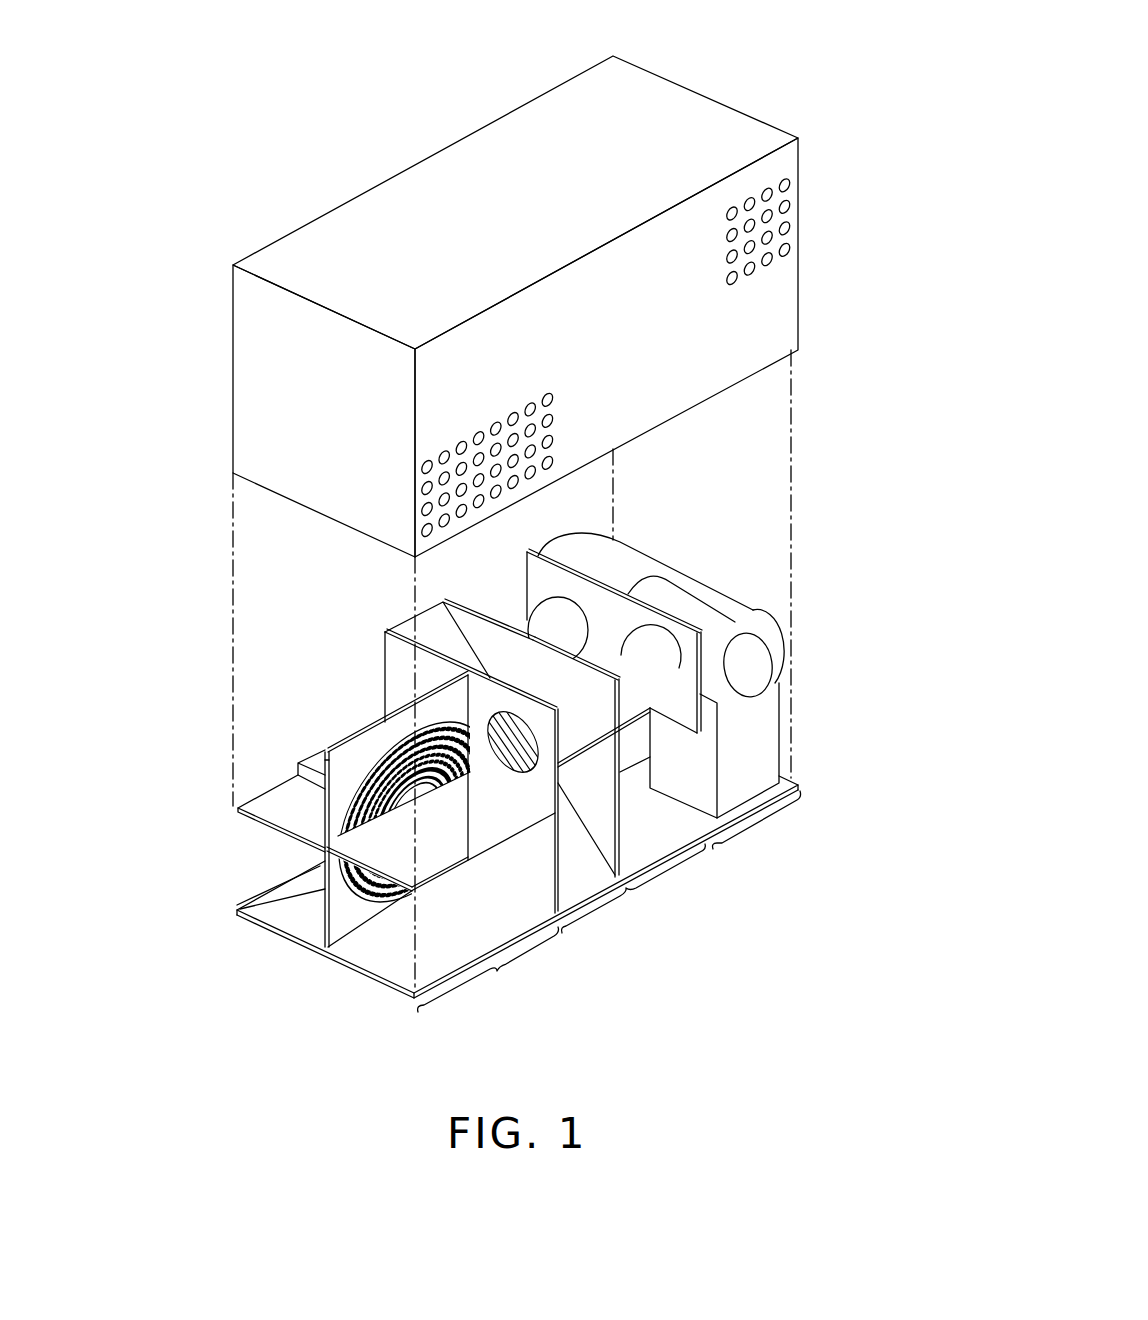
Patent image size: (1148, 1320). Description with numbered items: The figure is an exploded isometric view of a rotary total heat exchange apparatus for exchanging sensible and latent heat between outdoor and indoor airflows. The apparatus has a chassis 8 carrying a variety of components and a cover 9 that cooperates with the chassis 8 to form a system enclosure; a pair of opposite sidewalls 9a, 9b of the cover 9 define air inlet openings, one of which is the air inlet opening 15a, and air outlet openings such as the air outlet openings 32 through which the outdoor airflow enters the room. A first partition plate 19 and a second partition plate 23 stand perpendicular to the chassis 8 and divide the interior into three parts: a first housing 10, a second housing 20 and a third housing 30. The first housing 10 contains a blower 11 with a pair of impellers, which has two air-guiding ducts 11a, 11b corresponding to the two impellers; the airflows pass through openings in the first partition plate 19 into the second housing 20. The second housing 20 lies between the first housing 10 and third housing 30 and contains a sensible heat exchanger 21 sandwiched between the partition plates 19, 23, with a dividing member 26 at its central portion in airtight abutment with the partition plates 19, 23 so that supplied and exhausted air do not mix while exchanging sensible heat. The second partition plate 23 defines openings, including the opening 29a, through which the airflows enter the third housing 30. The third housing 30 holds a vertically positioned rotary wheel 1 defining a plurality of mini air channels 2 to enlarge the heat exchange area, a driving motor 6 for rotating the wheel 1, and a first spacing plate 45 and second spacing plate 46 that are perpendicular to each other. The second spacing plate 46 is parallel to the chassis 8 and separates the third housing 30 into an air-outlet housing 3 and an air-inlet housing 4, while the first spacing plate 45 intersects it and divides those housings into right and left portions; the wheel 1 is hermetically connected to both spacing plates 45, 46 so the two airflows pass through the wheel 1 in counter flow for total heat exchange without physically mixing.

The rotary wheel 1 is at (372, 856).
The mini air channels 2 is at (385, 897).
The air-outlet housing 3 is at (280, 756).
The air-inlet housing 4 is at (288, 858).
The driving motor 6 is at (317, 760).
The chassis 8 is at (330, 957).
The cover 9 is at (711, 125).
The sidewall 9a is at (722, 342).
The sidewall 9b is at (233, 412).
The first housing 10 is at (754, 838).
The blower 11 is at (765, 731).
The air-guiding duct 11a is at (735, 602).
The air-guiding duct 11b is at (617, 552).
The air inlet opening 15a is at (792, 212).
The first partition plate 19 is at (528, 640).
The second housing 20 is at (634, 896).
The sensible heat exchanger 21 is at (572, 710).
The second partition plate 23 is at (400, 655).
The dividing member 26 is at (453, 650).
The opening 29a is at (493, 712).
The third housing 30 is at (488, 972).
The air outlet openings 32 is at (551, 401).
The first spacing plate 45 is at (272, 891).
The second spacing plate 46 is at (322, 827).